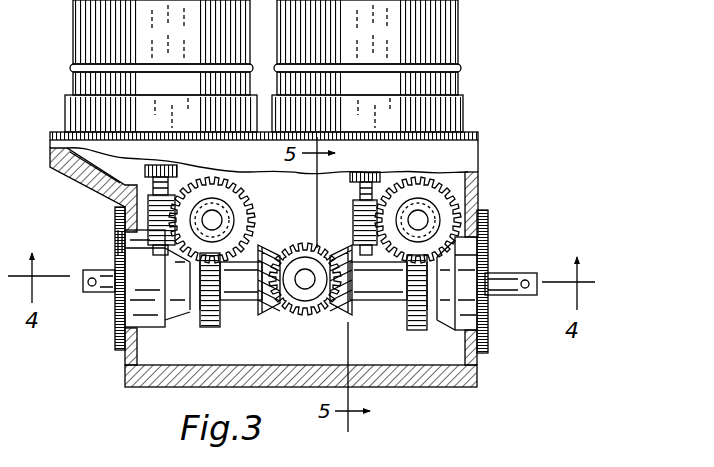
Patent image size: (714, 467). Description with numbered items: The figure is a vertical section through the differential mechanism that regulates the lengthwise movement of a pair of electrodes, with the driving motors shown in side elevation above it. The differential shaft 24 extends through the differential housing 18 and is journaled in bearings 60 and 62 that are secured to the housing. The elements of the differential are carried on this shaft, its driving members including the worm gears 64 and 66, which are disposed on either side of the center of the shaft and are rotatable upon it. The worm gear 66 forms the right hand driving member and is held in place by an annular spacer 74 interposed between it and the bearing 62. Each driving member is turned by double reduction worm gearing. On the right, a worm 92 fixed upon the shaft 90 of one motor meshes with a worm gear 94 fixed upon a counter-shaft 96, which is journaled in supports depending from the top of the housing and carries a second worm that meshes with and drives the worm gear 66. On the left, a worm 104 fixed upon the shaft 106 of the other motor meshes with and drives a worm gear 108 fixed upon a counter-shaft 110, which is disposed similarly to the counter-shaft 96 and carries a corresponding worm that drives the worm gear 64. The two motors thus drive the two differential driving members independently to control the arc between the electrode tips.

The differential housing 18 is at (422, 386).
The differential shaft 24 is at (514, 273).
The bearing 60 is at (155, 328).
The bearing 62 is at (477, 353).
The worm gear 64 is at (210, 328).
The worm gear 66 is at (415, 326).
The shaft of the motor 90 is at (355, 178).
The worm 92 is at (355, 225).
The worm gear 94 is at (438, 203).
The counter-shaft 96 is at (419, 220).
The worm 104 is at (146, 216).
The shaft of the motor 106 is at (118, 188).
The worm gear 108 is at (242, 198).
The counter-shaft 110 is at (214, 220).
The annular spacer 74 is at (463, 460).